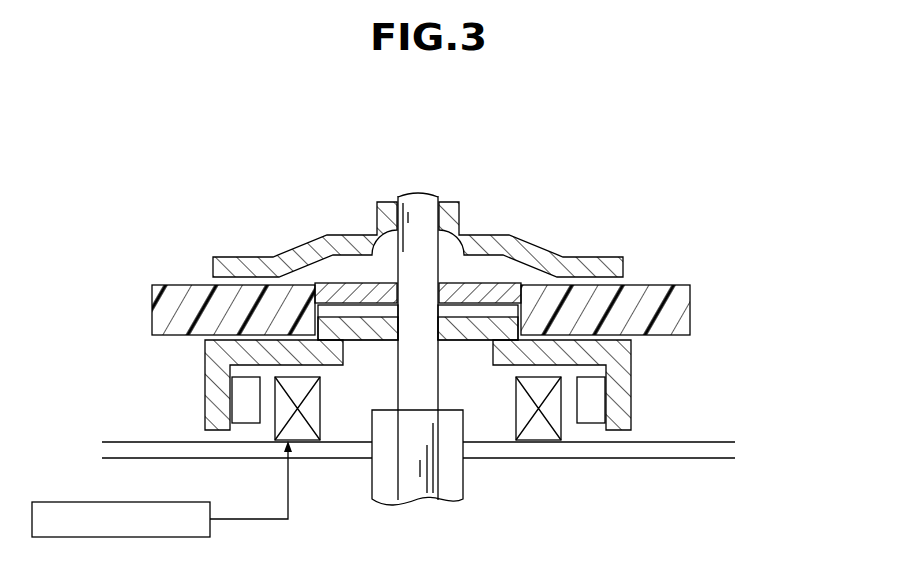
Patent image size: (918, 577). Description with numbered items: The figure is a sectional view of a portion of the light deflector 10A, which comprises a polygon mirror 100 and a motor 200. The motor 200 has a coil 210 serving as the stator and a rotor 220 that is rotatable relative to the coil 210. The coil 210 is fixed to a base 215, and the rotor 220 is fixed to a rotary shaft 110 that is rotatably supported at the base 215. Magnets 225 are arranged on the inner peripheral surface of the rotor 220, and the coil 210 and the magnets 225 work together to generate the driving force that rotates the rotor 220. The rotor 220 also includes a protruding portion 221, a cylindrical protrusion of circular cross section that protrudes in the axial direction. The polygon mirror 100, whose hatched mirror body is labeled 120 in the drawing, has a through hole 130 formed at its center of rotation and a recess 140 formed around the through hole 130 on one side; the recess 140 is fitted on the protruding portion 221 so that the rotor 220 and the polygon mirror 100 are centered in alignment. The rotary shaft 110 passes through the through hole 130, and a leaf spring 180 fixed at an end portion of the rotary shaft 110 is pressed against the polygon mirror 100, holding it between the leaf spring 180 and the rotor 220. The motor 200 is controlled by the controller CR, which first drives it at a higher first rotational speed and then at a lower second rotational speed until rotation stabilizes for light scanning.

The light deflector 10A is at (592, 170).
The polygon mirror 100 is at (671, 277).
The rotary shaft 110 is at (420, 191).
The rotor plate 120 is at (690, 310).
The through hole 130 is at (354, 292).
The recess 140 is at (508, 298).
The leaf spring 180 is at (309, 234).
The motor 200 is at (194, 402).
The coil 210 is at (308, 436).
The base 215 is at (488, 453).
The rotor 220 is at (621, 393).
The protruding portion 221 is at (365, 337).
The magnets 225 is at (250, 414).
The controller CR is at (98, 501).